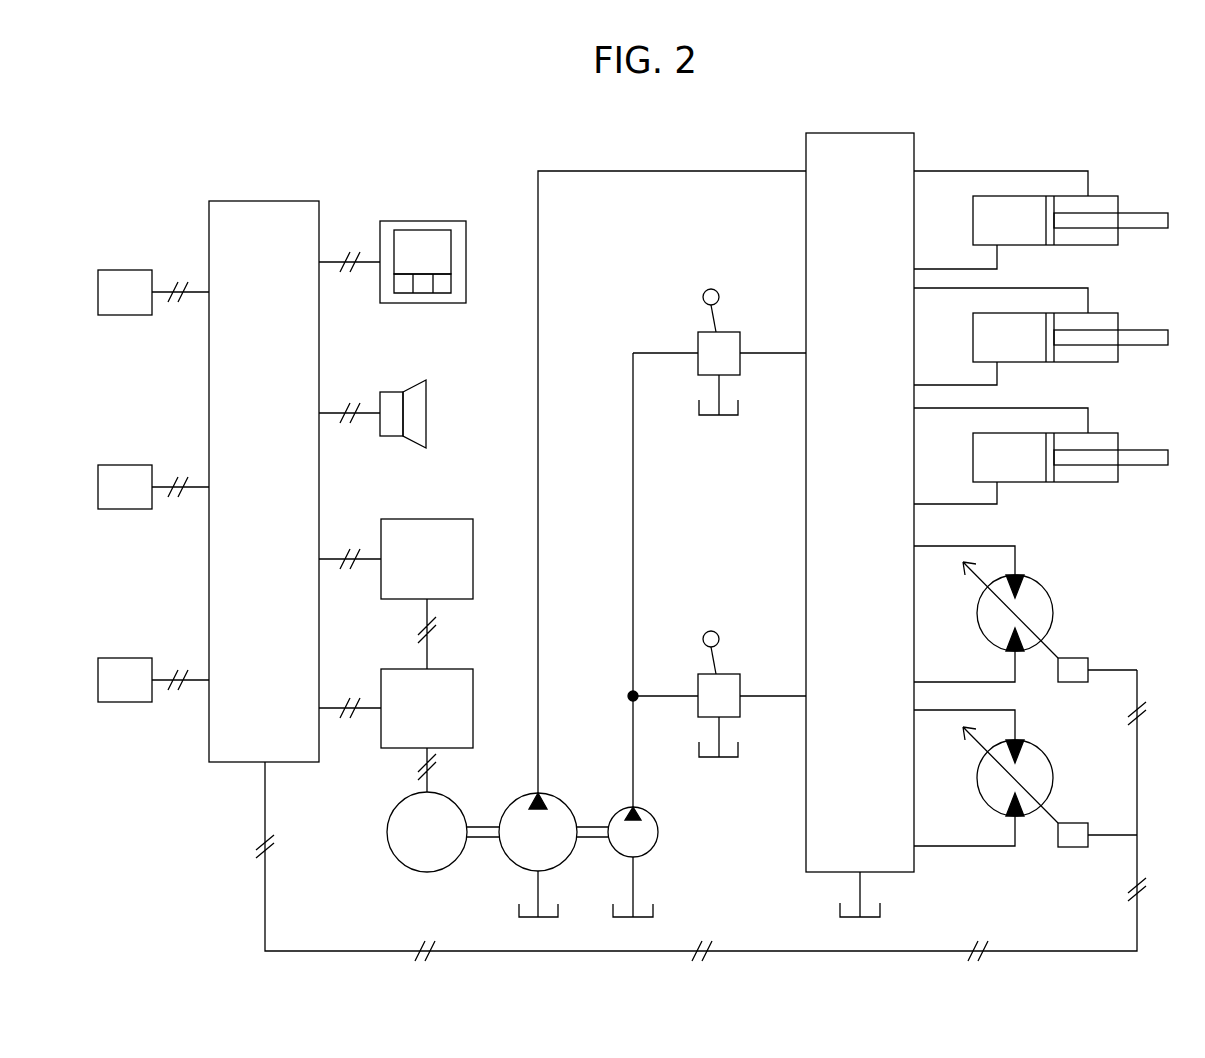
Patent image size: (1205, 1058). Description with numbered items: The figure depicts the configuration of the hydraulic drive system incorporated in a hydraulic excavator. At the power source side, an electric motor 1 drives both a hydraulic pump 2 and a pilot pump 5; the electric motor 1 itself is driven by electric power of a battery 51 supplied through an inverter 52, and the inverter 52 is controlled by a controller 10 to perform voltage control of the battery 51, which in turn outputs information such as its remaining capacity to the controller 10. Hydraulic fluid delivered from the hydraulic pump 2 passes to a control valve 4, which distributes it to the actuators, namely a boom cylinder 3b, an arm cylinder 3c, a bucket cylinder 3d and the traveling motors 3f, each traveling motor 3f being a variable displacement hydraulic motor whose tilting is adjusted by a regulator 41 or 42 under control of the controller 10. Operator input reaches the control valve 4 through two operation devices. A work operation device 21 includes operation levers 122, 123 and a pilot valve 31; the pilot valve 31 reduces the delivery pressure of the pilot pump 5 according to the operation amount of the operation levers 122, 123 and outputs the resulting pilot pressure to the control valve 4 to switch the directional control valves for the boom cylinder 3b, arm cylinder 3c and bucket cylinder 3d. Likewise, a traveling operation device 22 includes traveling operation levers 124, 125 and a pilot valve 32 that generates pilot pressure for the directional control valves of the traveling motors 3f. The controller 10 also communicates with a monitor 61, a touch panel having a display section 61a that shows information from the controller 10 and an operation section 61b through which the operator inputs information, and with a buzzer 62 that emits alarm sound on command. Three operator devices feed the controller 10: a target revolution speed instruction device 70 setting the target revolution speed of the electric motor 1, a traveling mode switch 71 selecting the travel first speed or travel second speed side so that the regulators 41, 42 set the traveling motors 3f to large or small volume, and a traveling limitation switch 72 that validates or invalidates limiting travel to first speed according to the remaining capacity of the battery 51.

The electric motor 1 is at (402, 858).
The hydraulic pump 2 is at (512, 858).
The boom cylinder 3b is at (1105, 196).
The arm cylinder 3c is at (1105, 313).
The bucket cylinder 3d is at (1105, 433).
The traveling motor 3f is at (1042, 593).
The control valve 4 is at (855, 133).
The pilot pump 5 is at (648, 848).
The controller 10 is at (265, 201).
The work operation device 21 is at (719, 309).
The traveling operation device 22 is at (719, 649).
The pilot valve 31 is at (719, 309).
The pilot valve 32 is at (719, 649).
The regulator 41 is at (1072, 658).
The regulator 42 is at (1072, 823).
The battery 51 is at (455, 519).
The inverter 52 is at (455, 669).
The monitor 61 is at (424, 231).
The display section 61a is at (447, 249).
The operation section 61b is at (447, 284).
The buzzer 62 is at (430, 413).
The target revolution speed instruction device 70 is at (126, 270).
The traveling mode switch 71 is at (126, 465).
The traveling limitation switch 72 is at (126, 658).
The operation lever 122 is at (743, 254).
The operation lever 123 is at (714, 289).
The traveling operation lever 124 is at (743, 594).
The traveling operation lever 125 is at (714, 631).